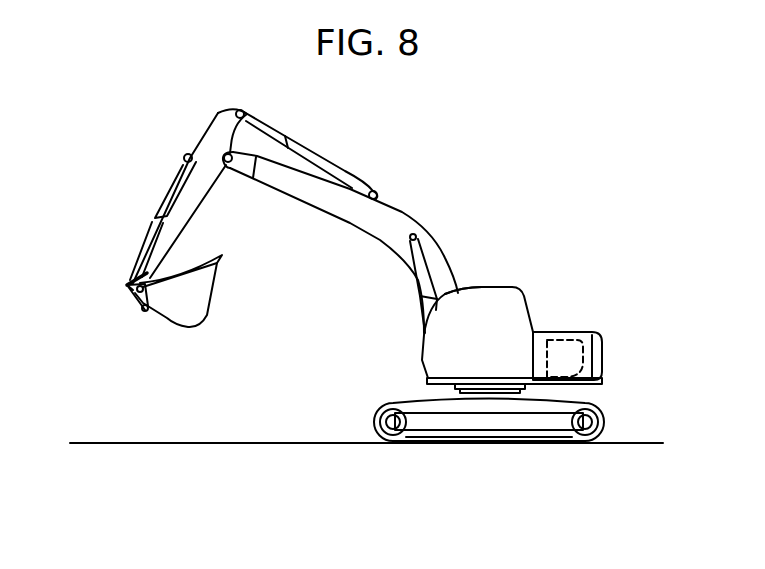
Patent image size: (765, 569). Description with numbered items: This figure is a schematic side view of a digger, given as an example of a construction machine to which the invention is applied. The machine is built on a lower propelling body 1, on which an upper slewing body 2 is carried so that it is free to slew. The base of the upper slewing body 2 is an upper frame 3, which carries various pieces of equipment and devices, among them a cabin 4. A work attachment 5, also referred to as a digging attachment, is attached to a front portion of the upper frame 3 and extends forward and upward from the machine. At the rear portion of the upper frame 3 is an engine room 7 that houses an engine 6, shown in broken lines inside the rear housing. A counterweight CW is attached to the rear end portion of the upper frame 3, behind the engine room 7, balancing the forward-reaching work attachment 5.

The lower propelling body 1 is at (482, 443).
The upper slewing body 2 is at (523, 284).
The upper frame 3 is at (542, 386).
The cabin 4 is at (474, 293).
The work attachment 5 is at (400, 198).
The engine 6 is at (587, 368).
The engine room 7 is at (592, 333).
The counterweight CW is at (602, 357).